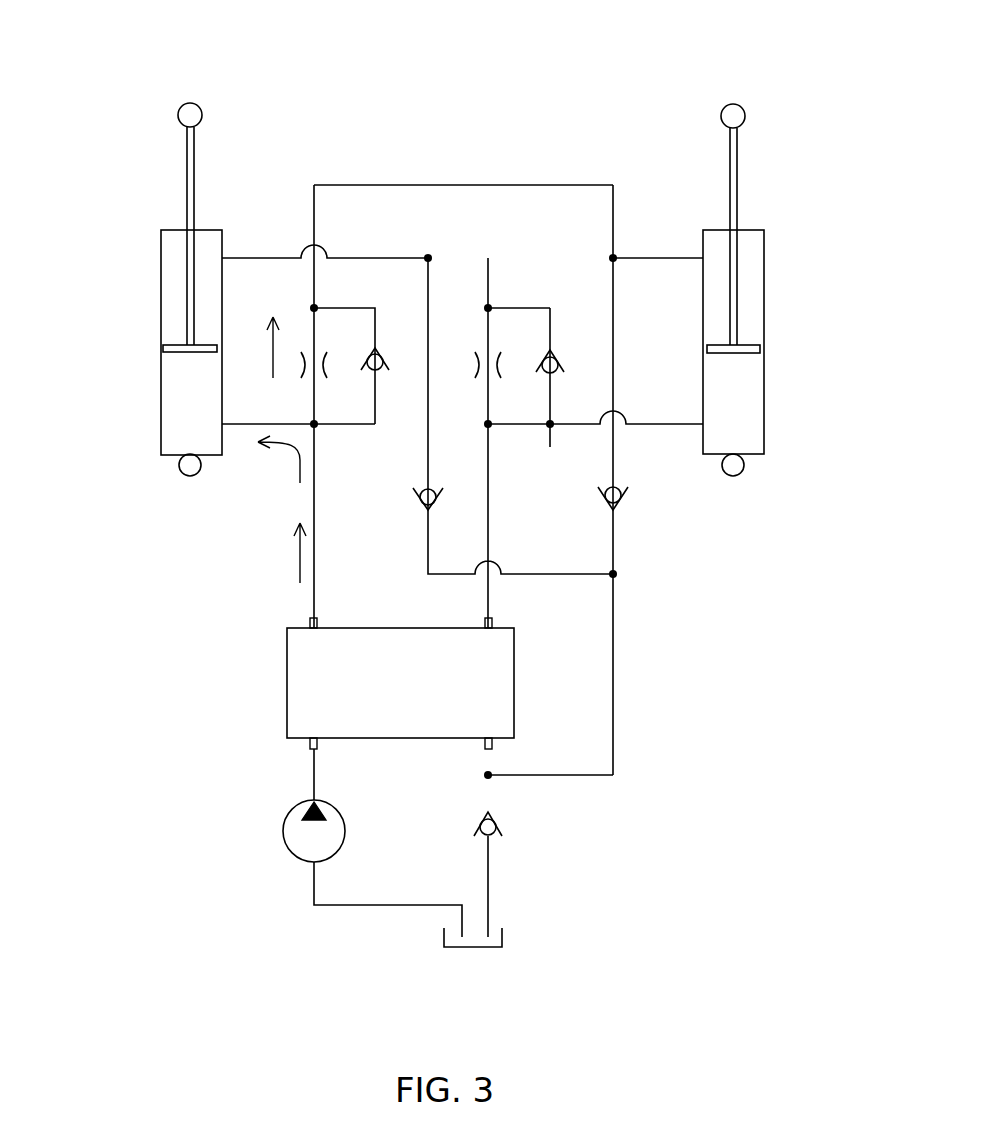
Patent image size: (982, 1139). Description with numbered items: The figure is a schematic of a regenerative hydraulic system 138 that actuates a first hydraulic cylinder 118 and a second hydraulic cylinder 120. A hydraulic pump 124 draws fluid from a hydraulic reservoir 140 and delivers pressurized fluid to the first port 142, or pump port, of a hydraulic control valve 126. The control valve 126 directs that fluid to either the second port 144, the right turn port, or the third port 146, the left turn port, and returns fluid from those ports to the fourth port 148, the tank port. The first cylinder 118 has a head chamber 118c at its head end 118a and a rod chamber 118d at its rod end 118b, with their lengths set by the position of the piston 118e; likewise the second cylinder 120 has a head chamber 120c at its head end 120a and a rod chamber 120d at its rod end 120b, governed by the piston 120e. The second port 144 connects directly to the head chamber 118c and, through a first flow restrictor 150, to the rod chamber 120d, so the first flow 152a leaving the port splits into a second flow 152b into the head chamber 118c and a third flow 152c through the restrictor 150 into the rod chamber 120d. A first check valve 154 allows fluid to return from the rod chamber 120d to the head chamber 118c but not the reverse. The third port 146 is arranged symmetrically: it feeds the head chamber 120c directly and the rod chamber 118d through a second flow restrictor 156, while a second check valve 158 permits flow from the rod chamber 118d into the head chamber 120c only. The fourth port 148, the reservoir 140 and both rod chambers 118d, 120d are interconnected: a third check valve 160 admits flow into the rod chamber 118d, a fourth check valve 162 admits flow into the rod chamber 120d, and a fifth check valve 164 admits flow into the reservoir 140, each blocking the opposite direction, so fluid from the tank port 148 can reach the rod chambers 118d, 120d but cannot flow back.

The hydraulic system 138 is at (488, 85).
The first hydraulic cylinder 118 is at (162, 349).
The head end 118a is at (160, 446).
The rod end 118b is at (184, 150).
The head chamber 118c is at (190, 397).
The rod chamber 118d is at (170, 257).
The piston 118e is at (165, 345).
The second hydraulic cylinder 120 is at (764, 355).
The head end 120a is at (764, 437).
The rod end 120b is at (738, 158).
The head chamber 120c is at (725, 410).
The rod chamber 120d is at (750, 283).
The piston 120e is at (752, 345).
The hydraulic pump 124 is at (283, 842).
The hydraulic control valve 126 is at (287, 677).
The hydraulic reservoir 140 is at (502, 930).
The first port 142 is at (309, 757).
The second port 144 is at (309, 615).
The third port 146 is at (492, 618).
The fourth port 148 is at (492, 752).
The first flow restrictor 150 is at (327, 352).
The first flow 152a is at (298, 550).
The second flow 152b is at (258, 455).
The third flow 152c is at (273, 348).
The first check valve 154 is at (386, 358).
The second flow restrictor 156 is at (480, 355).
The second check valve 158 is at (556, 358).
The third check valve 160 is at (413, 495).
The fourth check valve 162 is at (627, 490).
The fifth check valve 164 is at (500, 828).